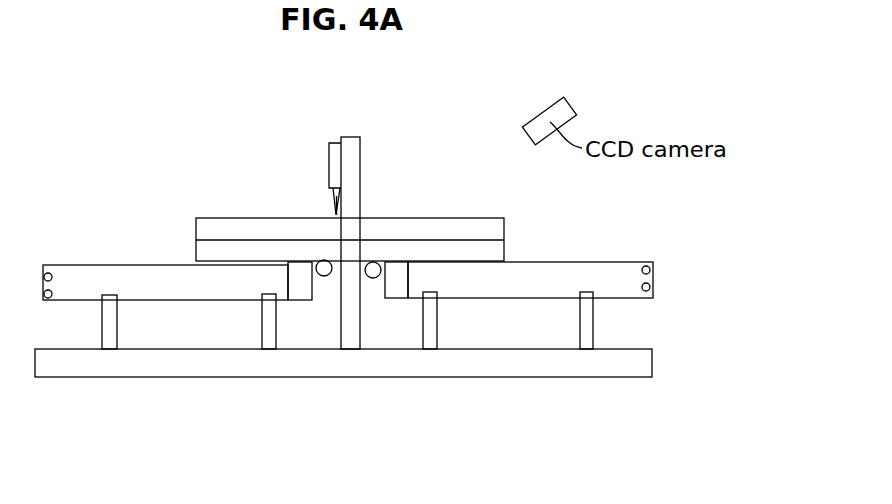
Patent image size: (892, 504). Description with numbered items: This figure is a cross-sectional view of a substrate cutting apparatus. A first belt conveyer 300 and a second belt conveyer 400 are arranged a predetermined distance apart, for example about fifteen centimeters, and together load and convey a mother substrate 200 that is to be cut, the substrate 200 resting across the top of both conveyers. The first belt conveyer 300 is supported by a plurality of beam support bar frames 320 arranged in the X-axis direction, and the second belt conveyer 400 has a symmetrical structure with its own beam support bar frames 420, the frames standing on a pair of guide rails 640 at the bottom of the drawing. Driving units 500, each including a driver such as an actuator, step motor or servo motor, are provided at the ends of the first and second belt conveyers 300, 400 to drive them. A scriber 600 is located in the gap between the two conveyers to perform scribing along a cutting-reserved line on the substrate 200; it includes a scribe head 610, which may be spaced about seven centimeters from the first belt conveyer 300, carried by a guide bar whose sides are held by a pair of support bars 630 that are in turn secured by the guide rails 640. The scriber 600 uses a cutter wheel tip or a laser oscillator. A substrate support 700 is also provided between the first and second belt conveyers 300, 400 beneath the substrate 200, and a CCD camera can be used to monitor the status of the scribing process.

The mother substrate 200 is at (500, 222).
The first belt conveyer 300 is at (108, 272).
The beam support bar frames 320 is at (108, 326).
The second belt conveyer 400 is at (612, 265).
The beam support bar frames 420 is at (590, 328).
The driving unit 500 is at (300, 293).
The scriber 600 is at (287, 165).
The scribe head 610 is at (334, 178).
The support bars 630 is at (355, 165).
The guide rails 640 is at (650, 360).
The substrate support 700 is at (327, 260).